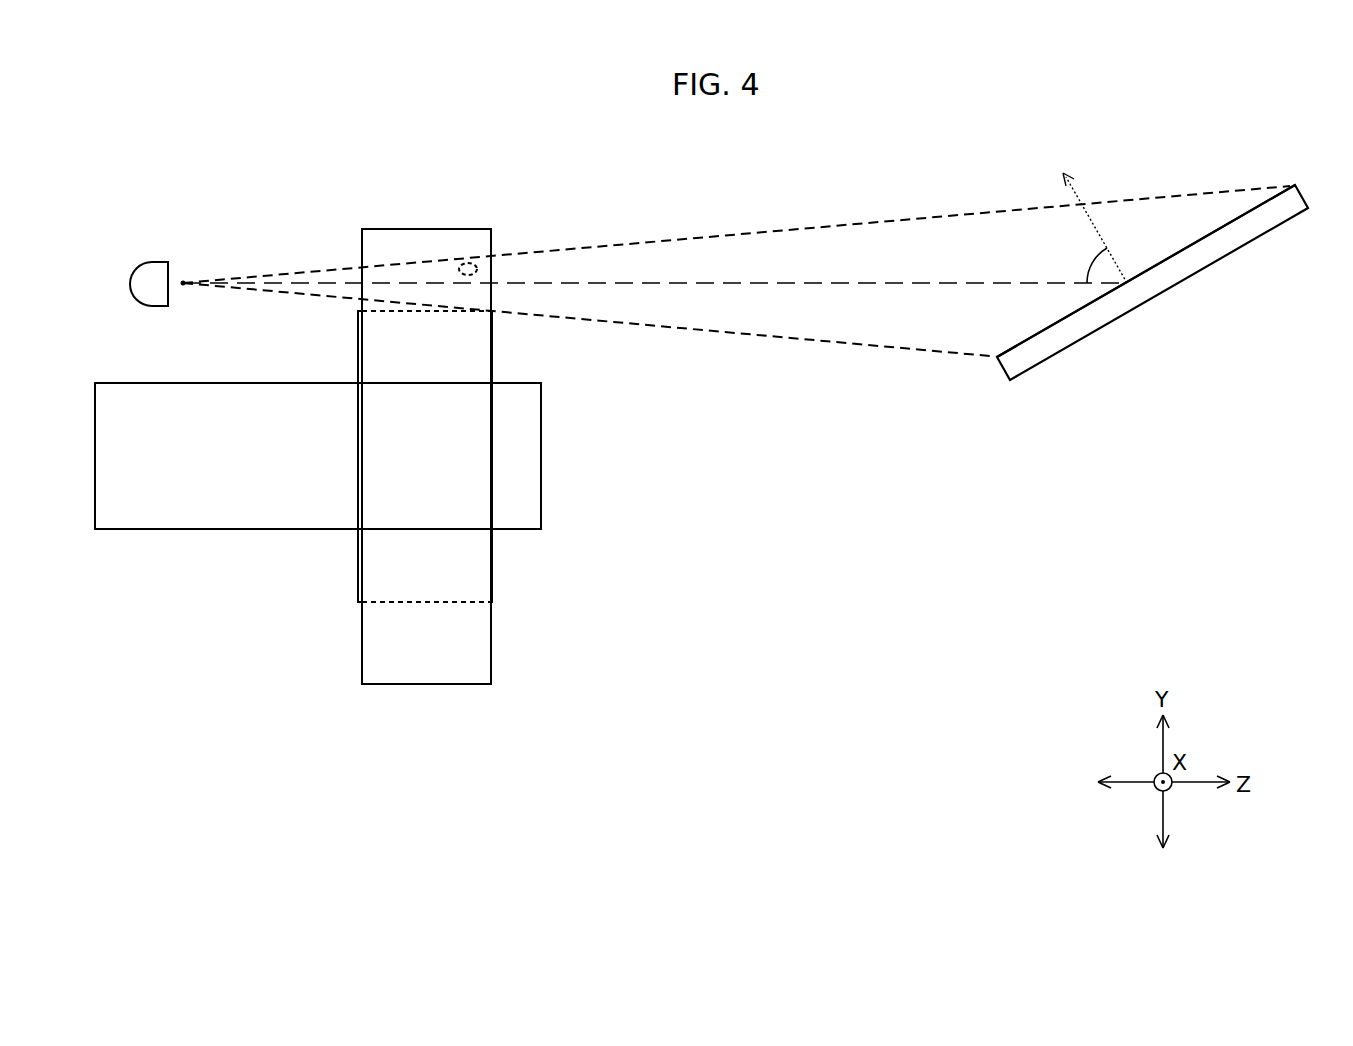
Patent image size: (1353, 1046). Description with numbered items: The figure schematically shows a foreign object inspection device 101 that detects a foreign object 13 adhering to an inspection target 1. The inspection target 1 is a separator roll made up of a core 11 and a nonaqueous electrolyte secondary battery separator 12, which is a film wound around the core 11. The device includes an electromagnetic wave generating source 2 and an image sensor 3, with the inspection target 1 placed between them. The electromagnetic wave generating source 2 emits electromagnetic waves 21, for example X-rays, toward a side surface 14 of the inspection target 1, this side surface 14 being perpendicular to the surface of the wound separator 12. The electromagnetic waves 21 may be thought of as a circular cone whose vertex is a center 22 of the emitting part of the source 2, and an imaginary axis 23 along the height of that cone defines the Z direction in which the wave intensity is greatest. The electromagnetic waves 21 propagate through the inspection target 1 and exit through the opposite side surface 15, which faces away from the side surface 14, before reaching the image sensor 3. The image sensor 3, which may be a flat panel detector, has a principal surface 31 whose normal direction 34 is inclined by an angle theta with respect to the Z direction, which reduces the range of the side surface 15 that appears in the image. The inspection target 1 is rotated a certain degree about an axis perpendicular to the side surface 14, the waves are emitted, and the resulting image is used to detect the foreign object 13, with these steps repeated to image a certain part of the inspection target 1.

The foreign object inspection device 101 is at (812, 156).
The inspection target 1 is at (441, 183).
The core 11 is at (389, 310).
The nonaqueous electrolyte secondary battery separator 12 is at (427, 236).
The foreign object 13 is at (468, 261).
The side surface 14 is at (358, 643).
The side surface 15 is at (493, 643).
The electromagnetic wave generating source 2 is at (153, 262).
The electromagnetic waves 21 is at (316, 292).
The center 22 is at (170, 283).
The axis 23 is at (280, 280).
The image sensor 3 is at (1094, 325).
The principal surface 31 is at (1228, 222).
The direction normal to the principal surface 34 is at (1109, 232).